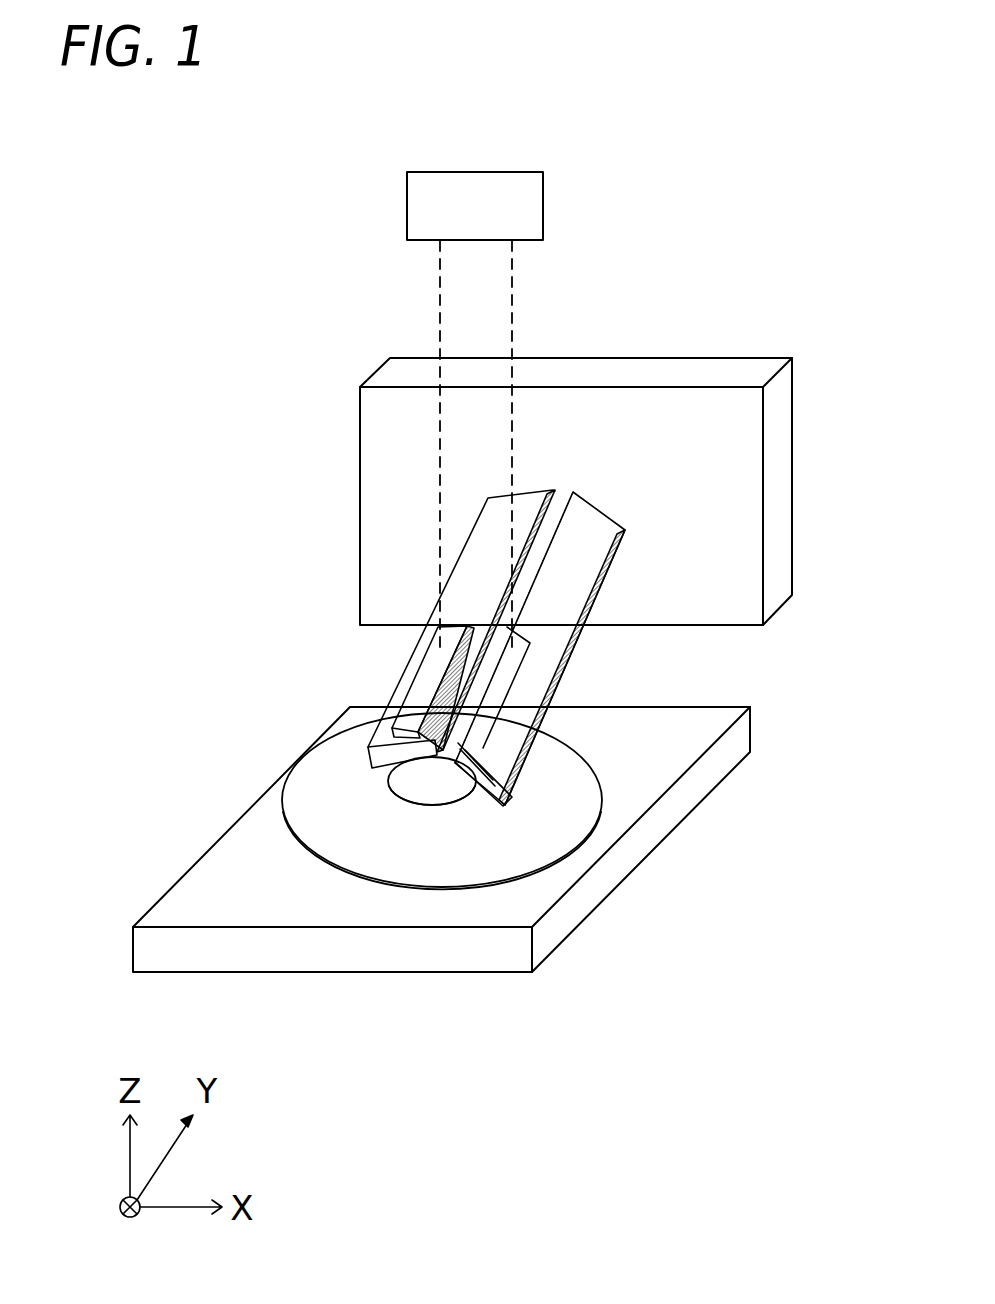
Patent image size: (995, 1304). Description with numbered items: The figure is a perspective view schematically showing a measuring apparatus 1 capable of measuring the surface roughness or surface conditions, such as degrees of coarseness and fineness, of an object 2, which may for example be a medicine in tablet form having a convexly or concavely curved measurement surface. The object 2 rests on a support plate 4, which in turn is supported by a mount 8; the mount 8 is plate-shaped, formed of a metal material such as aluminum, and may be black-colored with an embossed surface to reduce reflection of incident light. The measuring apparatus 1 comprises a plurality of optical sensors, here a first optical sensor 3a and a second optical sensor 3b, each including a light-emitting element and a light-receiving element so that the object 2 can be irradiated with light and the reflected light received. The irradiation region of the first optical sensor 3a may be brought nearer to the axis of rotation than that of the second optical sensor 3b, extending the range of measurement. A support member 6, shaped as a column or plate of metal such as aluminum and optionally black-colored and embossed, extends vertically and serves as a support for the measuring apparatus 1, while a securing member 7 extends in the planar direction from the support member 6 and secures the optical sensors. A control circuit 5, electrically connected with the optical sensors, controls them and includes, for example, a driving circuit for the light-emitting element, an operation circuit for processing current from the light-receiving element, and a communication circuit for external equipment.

The measuring apparatus 1 is at (293, 361).
The object 2 is at (420, 797).
The first optical sensor 3a is at (425, 683).
The second optical sensor 3b is at (482, 710).
The support plate 4 is at (343, 845).
The control circuit 5 is at (462, 215).
The support member 6 is at (682, 422).
The securing member 7 is at (522, 505).
The mount 8 is at (520, 893).